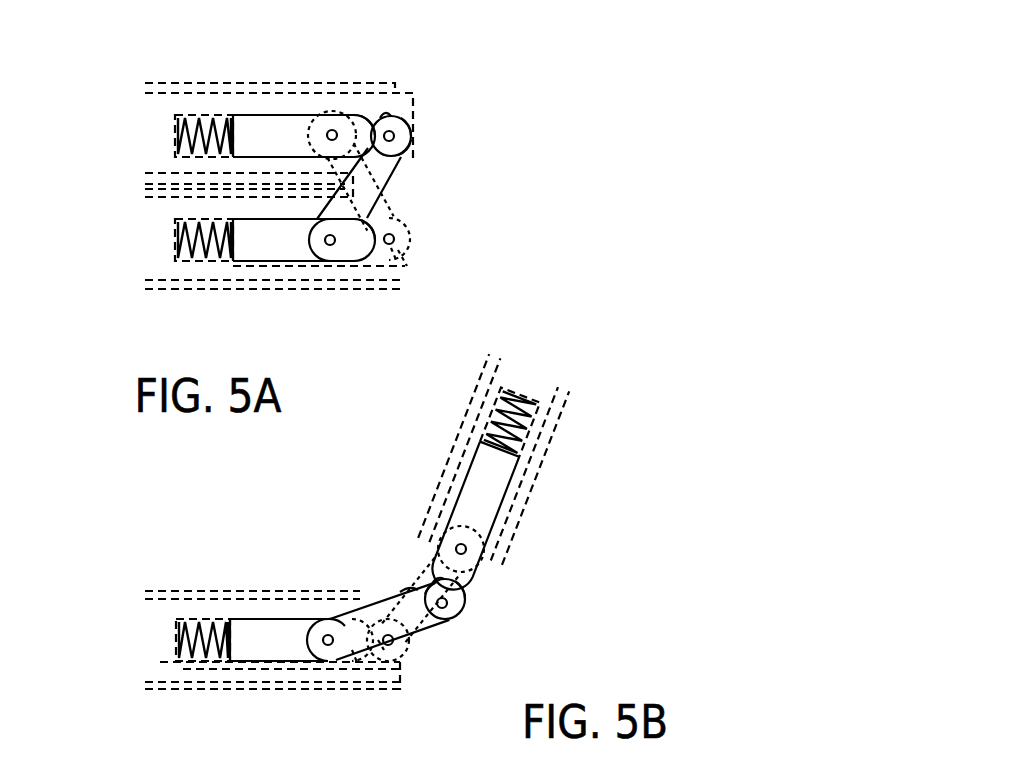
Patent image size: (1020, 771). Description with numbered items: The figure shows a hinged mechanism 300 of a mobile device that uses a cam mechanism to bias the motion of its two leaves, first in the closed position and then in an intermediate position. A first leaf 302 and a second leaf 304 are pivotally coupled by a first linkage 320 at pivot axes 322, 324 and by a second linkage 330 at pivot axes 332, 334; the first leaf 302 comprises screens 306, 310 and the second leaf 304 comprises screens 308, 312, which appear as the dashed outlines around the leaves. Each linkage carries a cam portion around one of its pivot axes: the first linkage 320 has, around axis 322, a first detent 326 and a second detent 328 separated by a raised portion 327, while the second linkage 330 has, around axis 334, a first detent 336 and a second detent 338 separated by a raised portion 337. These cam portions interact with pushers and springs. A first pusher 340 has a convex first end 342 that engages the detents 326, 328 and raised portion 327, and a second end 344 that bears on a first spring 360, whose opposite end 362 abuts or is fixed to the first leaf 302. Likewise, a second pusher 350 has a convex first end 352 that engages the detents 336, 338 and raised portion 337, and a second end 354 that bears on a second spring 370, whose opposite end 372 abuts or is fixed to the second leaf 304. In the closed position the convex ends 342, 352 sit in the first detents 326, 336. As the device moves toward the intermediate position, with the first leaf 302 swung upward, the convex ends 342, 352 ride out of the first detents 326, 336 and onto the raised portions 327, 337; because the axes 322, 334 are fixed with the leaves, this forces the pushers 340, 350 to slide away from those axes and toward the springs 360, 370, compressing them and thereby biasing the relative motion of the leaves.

In FIG. 5A, the hinged mechanism 300 is at (514, 156).
In FIG. 5B, the hinged mechanism 300 is at (236, 503).
In FIG. 5A, the first leaf 302 is at (215, 86).
In FIG. 5B, the first leaf 302 is at (498, 449).
In FIG. 5A, the second leaf 304 is at (220, 286).
In FIG. 5B, the second leaf 304 is at (217, 684).
In FIG. 5A, the screen 306 is at (170, 82).
In FIG. 5B, the screen 306 is at (493, 459).
In FIG. 5A, the screen 308 is at (168, 285).
In FIG. 5B, the screen 308 is at (165, 690).
In FIG. 5A, the screen 310 is at (152, 175).
In FIG. 5A, the screen 312 is at (152, 198).
In FIG. 5B, the screen 312 is at (160, 590).
In FIG. 5A, the first linkage 320 is at (399, 161).
In FIG. 5B, the first linkage 320 is at (429, 639).
In FIG. 5A, the pivot axis 322 is at (393, 137).
In FIG. 5B, the pivot axis 322 is at (446, 608).
In FIG. 5A, the pivot axis 324 is at (330, 245).
In FIG. 5B, the pivot axis 324 is at (328, 645).
In FIG. 5A, the first detent 326 is at (365, 128).
In FIG. 5B, the first detent 326 is at (400, 592).
In FIG. 5A, the raised portion 327 is at (380, 118).
In FIG. 5B, the raised portion 327 is at (433, 560).
In FIG. 5A, the second detent 328 is at (401, 112).
In FIG. 5B, the second detent 328 is at (460, 596).
In FIG. 5A, the second linkage 330 is at (413, 225).
In FIG. 5B, the second linkage 330 is at (460, 590).
In FIG. 5A, the pivot axis 332 is at (331, 134).
In FIG. 5B, the pivot axis 332 is at (466, 549).
In FIG. 5A, the pivot axis 334 is at (394, 242).
In FIG. 5B, the pivot axis 334 is at (396, 643).
In FIG. 5A, the first detent 336 is at (356, 268).
In FIG. 5B, the first detent 336 is at (355, 600).
In FIG. 5A, the raised portion 337 is at (397, 262).
In FIG. 5B, the raised portion 337 is at (358, 665).
In FIG. 5A, the second detent 338 is at (407, 266).
In FIG. 5B, the second detent 338 is at (384, 650).
In FIG. 5A, the first pusher 340 is at (268, 120).
In FIG. 5B, the first pusher 340 is at (470, 488).
In FIG. 5A, the convex first end 342 is at (398, 164).
In FIG. 5B, the convex first end 342 is at (425, 572).
In FIG. 5A, the second end 344 is at (227, 116).
In FIG. 5B, the second end 344 is at (475, 440).
In FIG. 5A, the second pusher 350 is at (278, 260).
In FIG. 5B, the second pusher 350 is at (274, 648).
In FIG. 5A, the convex first end 352 is at (372, 222).
In FIG. 5B, the convex first end 352 is at (343, 598).
In FIG. 5A, the second end 354 is at (233, 262).
In FIG. 5B, the second end 354 is at (226, 662).
In FIG. 5A, the first spring 360 is at (212, 116).
In FIG. 5B, the first spring 360 is at (488, 436).
In FIG. 5A, the opposite end 362 is at (175, 142).
In FIG. 5B, the opposite end 362 is at (520, 400).
In FIG. 5A, the second spring 370 is at (212, 262).
In FIG. 5B, the second spring 370 is at (207, 662).
In FIG. 5A, the opposite end 372 is at (175, 243).
In FIG. 5B, the opposite end 372 is at (176, 640).